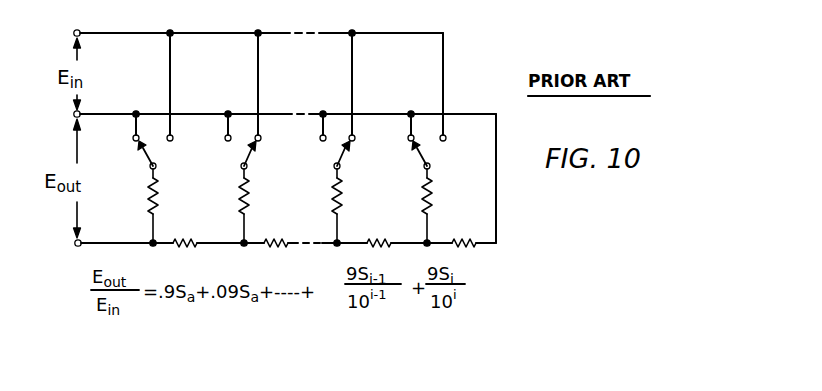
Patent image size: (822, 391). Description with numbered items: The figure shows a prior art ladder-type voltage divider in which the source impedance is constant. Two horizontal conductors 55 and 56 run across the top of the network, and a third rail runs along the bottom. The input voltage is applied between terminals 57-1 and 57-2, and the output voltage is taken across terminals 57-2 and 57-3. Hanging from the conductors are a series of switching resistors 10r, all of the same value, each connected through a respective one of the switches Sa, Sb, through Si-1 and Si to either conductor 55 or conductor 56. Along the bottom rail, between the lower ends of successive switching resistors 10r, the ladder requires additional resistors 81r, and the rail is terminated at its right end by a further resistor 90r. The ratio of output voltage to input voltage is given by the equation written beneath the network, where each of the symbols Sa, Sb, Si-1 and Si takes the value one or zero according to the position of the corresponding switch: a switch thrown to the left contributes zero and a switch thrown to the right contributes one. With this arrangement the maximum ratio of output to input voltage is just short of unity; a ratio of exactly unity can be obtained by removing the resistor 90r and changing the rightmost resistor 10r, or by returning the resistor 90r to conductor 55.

The conductor 55 is at (228, 33).
The conductor 56 is at (219, 112).
The terminal 57-1 is at (73, 34).
The terminal 57-2 is at (73, 114).
The terminal 57-3 is at (74, 243).
The switching resistor 10r is at (160, 200).
The additional resistor 81r is at (197, 236).
The additional resistor 90r is at (476, 236).
The switch Sa is at (157, 155).
The switch Sb is at (249, 160).
The switch Si-1 is at (343, 157).
The switch Si is at (431, 157).